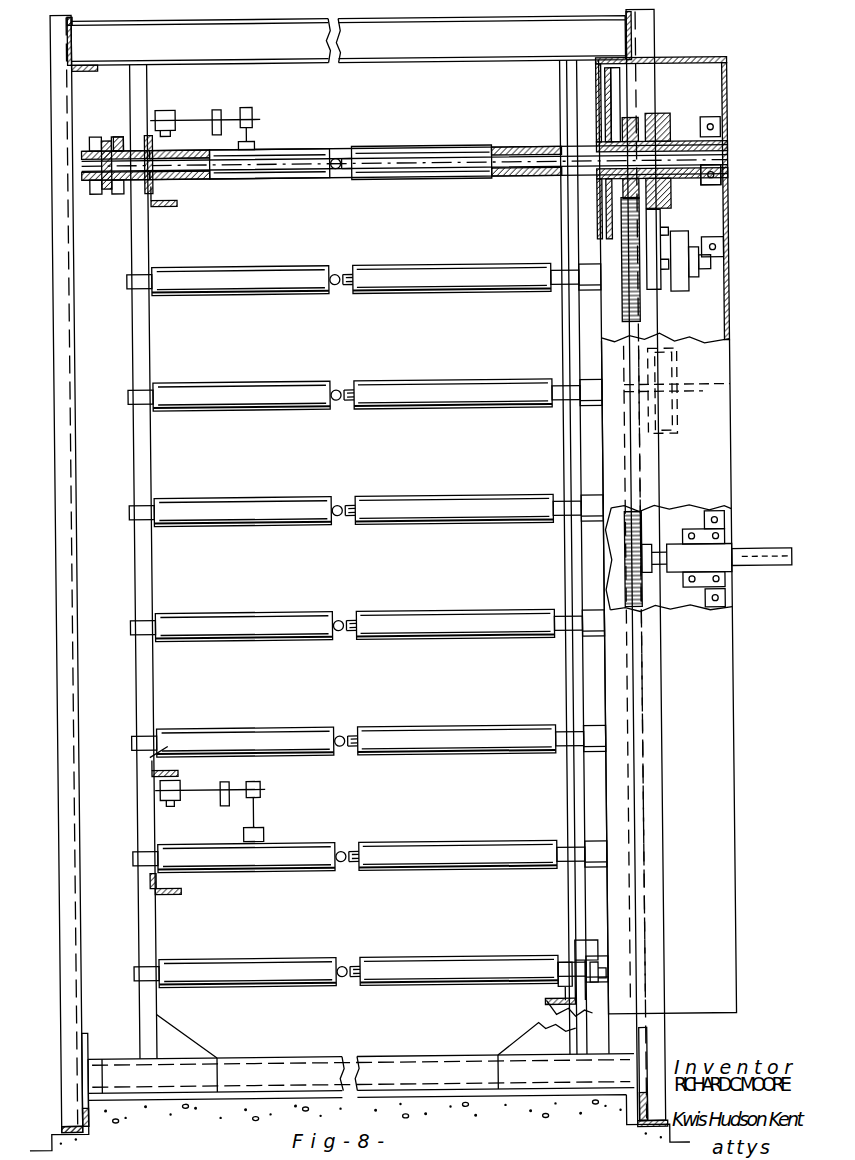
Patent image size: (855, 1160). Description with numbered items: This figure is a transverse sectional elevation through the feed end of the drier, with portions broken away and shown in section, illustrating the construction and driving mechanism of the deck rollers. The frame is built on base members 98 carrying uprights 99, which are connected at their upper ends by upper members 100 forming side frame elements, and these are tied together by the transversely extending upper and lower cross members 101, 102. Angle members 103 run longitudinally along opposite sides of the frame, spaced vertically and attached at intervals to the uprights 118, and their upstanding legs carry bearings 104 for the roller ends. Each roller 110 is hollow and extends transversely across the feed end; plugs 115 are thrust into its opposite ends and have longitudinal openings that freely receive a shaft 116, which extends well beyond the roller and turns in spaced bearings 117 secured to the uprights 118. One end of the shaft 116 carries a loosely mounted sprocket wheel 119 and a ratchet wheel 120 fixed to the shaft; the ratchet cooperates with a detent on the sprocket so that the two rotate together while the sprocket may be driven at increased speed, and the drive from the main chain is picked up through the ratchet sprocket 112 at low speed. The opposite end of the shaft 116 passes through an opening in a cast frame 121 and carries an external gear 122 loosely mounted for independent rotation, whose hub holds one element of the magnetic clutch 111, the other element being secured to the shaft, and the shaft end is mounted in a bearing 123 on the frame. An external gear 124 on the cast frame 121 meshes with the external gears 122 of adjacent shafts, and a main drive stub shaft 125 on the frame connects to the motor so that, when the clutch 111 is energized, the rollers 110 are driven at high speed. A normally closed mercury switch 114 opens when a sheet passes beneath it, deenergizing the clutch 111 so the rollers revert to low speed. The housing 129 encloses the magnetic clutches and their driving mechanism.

The base member 98 is at (56, 1125).
The upright 99 is at (58, 92).
The upper member 100 is at (75, 22).
The upper cross member 101 is at (406, 48).
The lower cross member 102 is at (376, 1065).
The angle member 103 is at (166, 206).
The bearing 104 is at (556, 992).
The roller 110 is at (392, 496).
The magnetic clutch 111 is at (674, 118).
The ratchet sprocket 112 is at (90, 182).
The mercury switch 114 is at (230, 116).
The plug 115 is at (176, 178).
The shaft 116 is at (492, 172).
The bearing 117 is at (154, 148).
The upright 118 is at (146, 364).
The sprocket wheel 119 is at (122, 134).
The ratchet wheel 120 is at (114, 190).
The cast frame 121 is at (613, 98).
The external gear 122 is at (634, 122).
The bearing 123 is at (726, 190).
The external gear 124 is at (612, 212).
The main drive stub shaft 125 is at (768, 554).
The housing 129 is at (730, 450).